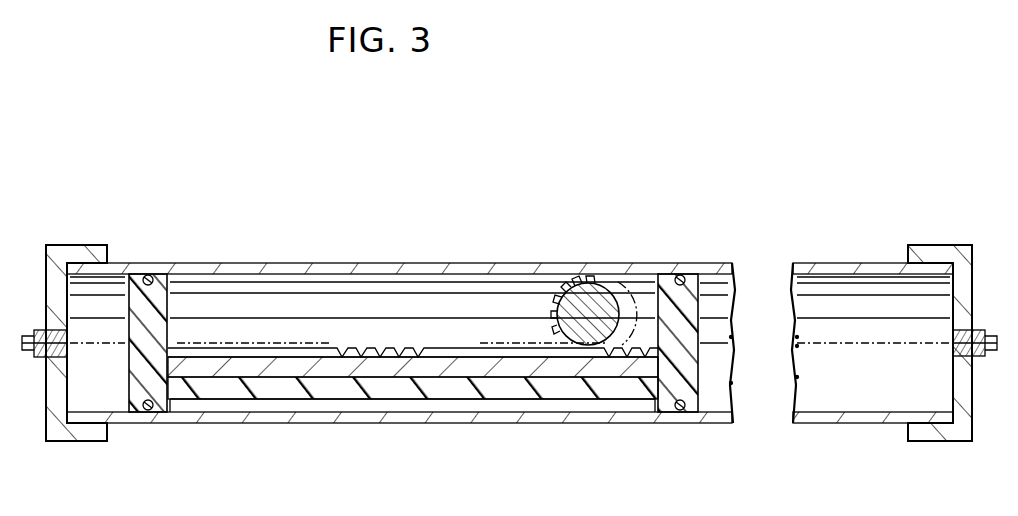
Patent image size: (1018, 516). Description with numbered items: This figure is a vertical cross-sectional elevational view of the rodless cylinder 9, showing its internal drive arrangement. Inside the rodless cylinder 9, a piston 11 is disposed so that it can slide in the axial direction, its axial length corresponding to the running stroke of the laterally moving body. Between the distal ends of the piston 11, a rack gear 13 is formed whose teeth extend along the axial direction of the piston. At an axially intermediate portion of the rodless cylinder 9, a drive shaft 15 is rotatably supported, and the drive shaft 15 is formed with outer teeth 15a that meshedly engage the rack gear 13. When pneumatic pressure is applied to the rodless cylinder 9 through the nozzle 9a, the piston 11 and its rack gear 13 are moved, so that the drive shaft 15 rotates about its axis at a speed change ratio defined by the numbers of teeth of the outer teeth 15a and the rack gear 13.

The rodless cylinder 9 is at (669, 232).
The nozzle 9a is at (985, 330).
The piston 11 is at (162, 304).
The rack gear 13 is at (334, 348).
The drive shaft 15 is at (605, 283).
The outer teeth 15a is at (557, 305).